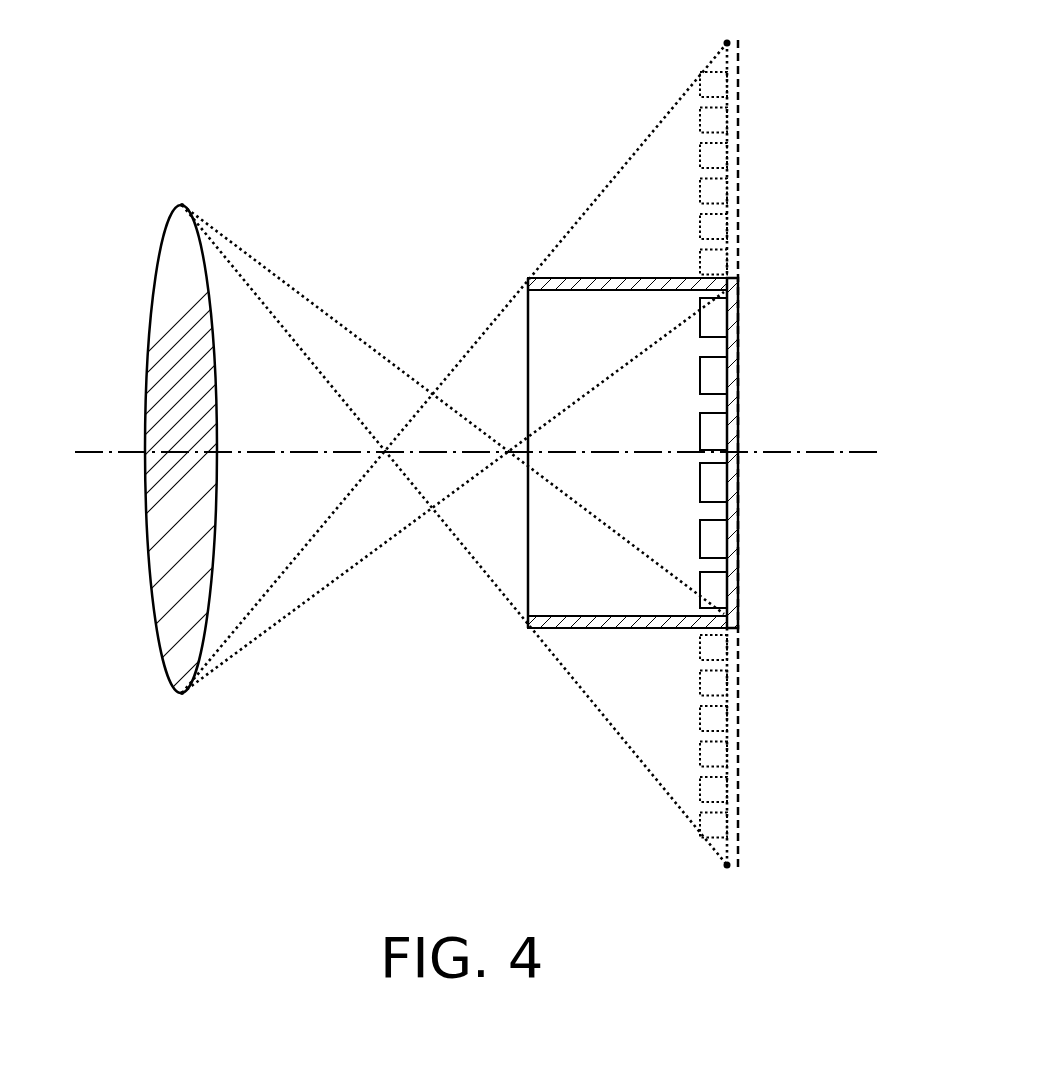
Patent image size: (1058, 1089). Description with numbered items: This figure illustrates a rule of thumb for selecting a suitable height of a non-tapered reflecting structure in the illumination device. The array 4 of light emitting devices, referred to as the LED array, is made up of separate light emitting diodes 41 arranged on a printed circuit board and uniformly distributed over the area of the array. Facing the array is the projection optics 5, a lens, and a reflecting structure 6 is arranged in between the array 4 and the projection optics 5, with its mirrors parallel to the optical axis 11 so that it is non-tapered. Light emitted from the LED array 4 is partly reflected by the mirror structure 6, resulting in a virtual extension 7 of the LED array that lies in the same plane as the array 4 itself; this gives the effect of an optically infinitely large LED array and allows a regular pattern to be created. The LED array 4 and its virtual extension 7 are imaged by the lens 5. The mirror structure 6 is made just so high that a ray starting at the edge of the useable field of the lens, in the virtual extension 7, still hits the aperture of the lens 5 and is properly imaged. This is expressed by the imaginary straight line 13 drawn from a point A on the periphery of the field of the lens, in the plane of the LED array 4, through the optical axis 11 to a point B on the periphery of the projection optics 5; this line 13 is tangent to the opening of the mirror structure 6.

The array of light emitting devices 4 is at (649, 455).
The light emitting diodes 41 is at (716, 374).
The projection optics 5 is at (165, 293).
The reflecting structure 6 is at (577, 278).
The virtual extension 7 is at (695, 228).
The optical axis 11 is at (95, 450).
The imaginary straight line 13 is at (652, 121).
The point on the periphery of the field of the lens A is at (727, 43).
The point on the periphery of the projection optics B is at (188, 200).